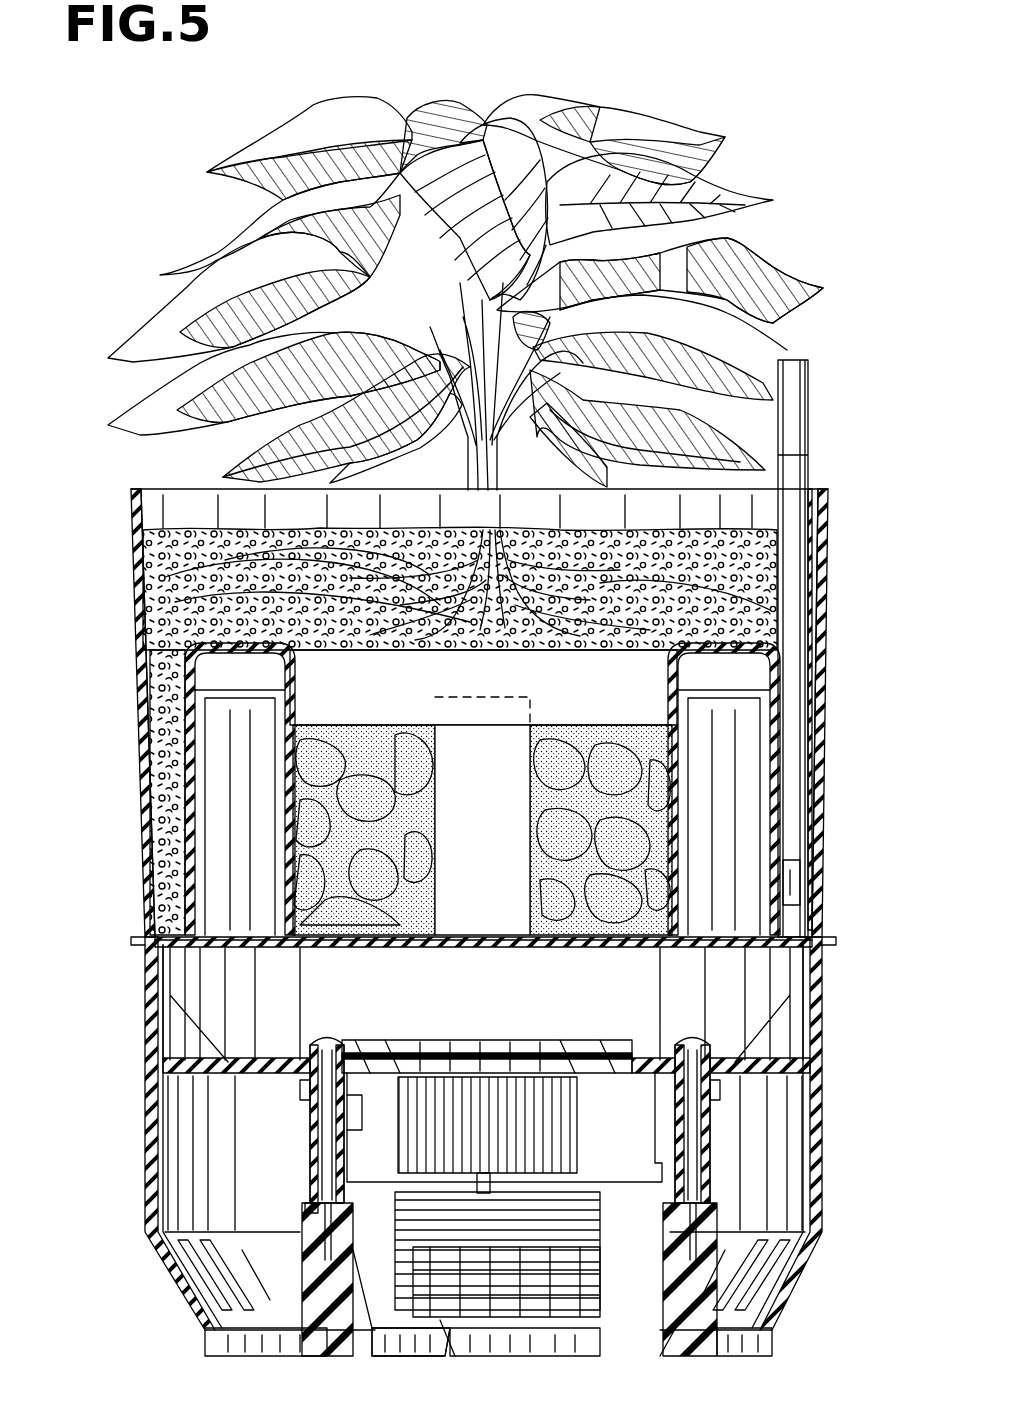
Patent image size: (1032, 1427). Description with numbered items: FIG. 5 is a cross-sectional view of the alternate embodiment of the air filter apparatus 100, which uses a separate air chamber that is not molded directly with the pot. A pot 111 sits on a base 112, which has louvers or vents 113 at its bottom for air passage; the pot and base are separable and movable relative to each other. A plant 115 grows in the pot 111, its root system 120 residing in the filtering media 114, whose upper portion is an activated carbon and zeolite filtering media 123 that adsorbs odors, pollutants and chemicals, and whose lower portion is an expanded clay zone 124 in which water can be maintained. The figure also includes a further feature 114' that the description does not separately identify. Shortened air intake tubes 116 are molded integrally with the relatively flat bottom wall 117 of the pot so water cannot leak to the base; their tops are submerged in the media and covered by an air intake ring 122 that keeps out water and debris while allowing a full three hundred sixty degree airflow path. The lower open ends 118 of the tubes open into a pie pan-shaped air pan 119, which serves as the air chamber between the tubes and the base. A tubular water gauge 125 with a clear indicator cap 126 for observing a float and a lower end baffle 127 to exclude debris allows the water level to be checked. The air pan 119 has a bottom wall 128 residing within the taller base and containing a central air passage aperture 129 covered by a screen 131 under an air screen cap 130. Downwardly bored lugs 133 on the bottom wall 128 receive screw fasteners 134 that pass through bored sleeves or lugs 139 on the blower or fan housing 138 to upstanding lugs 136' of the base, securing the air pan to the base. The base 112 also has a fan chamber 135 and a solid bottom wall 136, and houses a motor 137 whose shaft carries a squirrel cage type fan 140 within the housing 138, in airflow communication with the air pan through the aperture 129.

The air filter apparatus 100 is at (118, 845).
The pot 111 is at (145, 705).
The base 112 is at (150, 1132).
The louvers or vents 113 is at (268, 1283).
The filtering media 114 is at (455, 749).
The inner pot lower wall 114' is at (520, 1002).
The plant 115 is at (160, 290).
The air intake tubes 116 is at (222, 756).
The bottom wall 117 is at (403, 945).
The lower open ends 118 is at (280, 945).
The air pan 119 is at (170, 962).
The root system 120 is at (230, 572).
The air intake ring 122 is at (300, 648).
The filtering media 123 is at (178, 622).
The expanded clay zone 124 is at (160, 882).
The tubular water gauge 125 is at (798, 578).
The clear indicator cap 126 is at (805, 392).
The lower end baffle 127 is at (818, 885).
The bottom wall 128 is at (290, 1045).
The central air passage aperture 129 is at (590, 1076).
The air screen cap 130 is at (592, 1045).
The screen 131 is at (425, 1042).
The downwardly bored lugs 133 is at (300, 1092).
The screw fasteners 134 is at (318, 1132).
The fan chamber 135 is at (370, 1290).
The solid bottom wall 136 is at (526, 1353).
The upstanding lugs 136' is at (480, 1269).
The motor 137 is at (570, 1285).
The blower or fan housing 138 is at (622, 1183).
The bored sleeves or lugs 139 is at (347, 1150).
The squirrel cage type fan 140 is at (500, 1131).